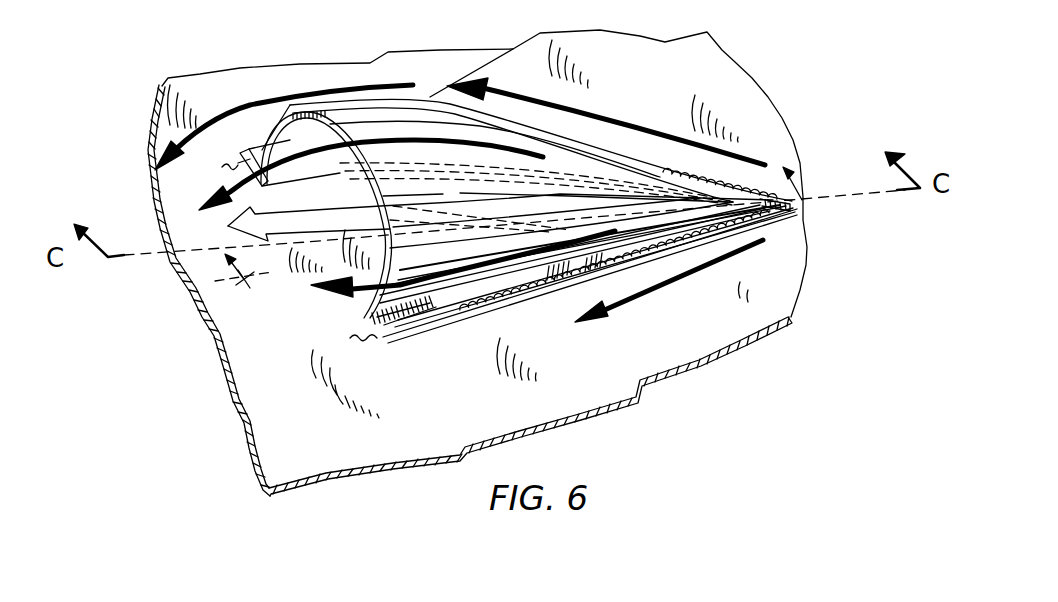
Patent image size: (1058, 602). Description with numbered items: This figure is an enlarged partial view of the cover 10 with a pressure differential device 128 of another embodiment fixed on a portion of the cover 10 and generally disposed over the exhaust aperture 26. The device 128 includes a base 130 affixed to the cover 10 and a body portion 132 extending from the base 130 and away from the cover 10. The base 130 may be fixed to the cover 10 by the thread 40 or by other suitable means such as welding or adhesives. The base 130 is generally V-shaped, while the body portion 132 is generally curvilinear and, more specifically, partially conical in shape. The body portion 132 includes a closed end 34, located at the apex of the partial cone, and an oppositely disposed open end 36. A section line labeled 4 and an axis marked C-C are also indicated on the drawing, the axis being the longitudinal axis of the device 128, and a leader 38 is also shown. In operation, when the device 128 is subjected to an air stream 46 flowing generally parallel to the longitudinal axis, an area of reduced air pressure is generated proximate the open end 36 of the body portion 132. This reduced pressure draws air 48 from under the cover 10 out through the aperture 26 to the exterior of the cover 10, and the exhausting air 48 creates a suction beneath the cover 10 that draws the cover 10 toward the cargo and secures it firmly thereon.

The cover 10 is at (722, 95).
The section line 4- 4 is at (514, 216).
The exhaust aperture 26 is at (370, 262).
The closed end 34 is at (788, 206).
The open end 36 is at (366, 301).
The bracket 38 is at (310, 190).
The thread 40 is at (376, 340).
The air stream 46 is at (238, 108).
The air 48 is at (317, 213).
The pressure differential device 128 is at (433, 97).
The base 130 is at (547, 302).
The body portion 132 is at (473, 257).